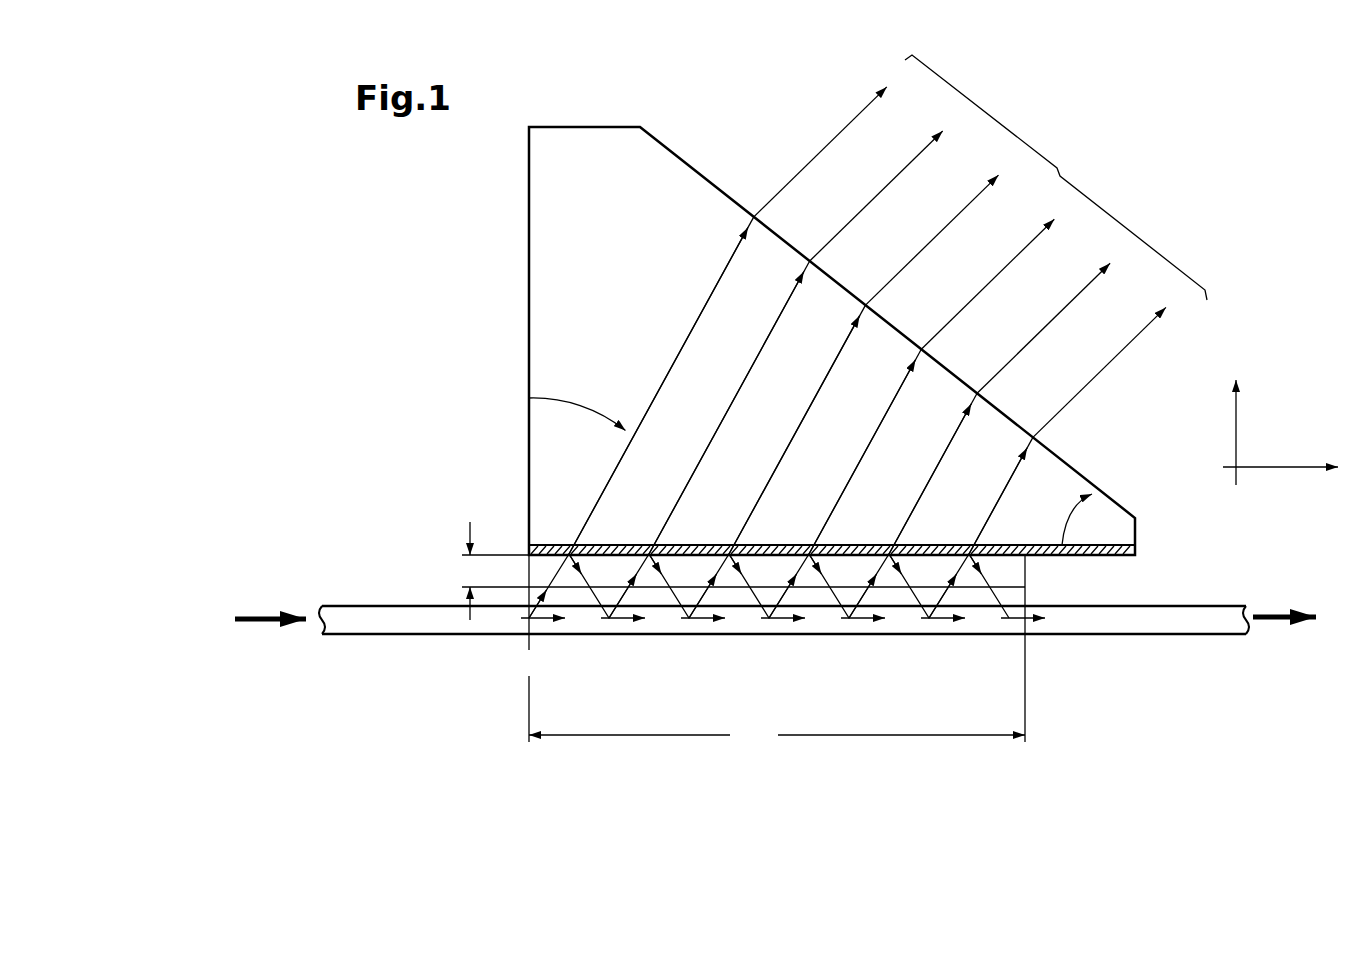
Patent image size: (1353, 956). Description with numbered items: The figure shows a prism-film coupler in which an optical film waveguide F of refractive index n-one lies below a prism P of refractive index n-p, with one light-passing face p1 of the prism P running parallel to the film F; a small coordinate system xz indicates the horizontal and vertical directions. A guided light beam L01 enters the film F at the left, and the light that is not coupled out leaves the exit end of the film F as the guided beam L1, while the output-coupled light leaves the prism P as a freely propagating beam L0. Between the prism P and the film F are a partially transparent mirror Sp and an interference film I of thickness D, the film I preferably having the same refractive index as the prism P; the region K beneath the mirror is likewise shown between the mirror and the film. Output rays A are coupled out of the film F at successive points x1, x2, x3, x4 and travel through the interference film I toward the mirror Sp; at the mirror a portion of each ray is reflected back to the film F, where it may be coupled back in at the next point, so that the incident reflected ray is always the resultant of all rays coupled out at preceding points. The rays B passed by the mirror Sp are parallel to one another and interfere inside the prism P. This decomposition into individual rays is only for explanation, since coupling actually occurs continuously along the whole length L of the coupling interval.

The prism P is at (545, 232).
The partially transparent mirror Sp is at (529, 546).
The coupling layer K is at (1022, 593).
The interference film I is at (545, 575).
The optical film waveguide F is at (405, 636).
The thickness of the interference film D is at (494, 571).
The length of the coupling interval L is at (777, 653).
The light-passing face of the prism p1 is at (1098, 556).
The freely propagating light beam L0 is at (1056, 177).
The incoming guided light beam L01 is at (258, 646).
The exiting guided light beam L1 is at (1280, 645).
The output rays A is at (783, 586).
The output rays passed by the mirror B is at (867, 320).
The output coupling point x1 is at (539, 664).
The output coupling point x2 is at (620, 664).
The output coupling point x3 is at (703, 664).
The output coupling point x4 is at (785, 664).
The coordinate axes xz is at (1283, 429).